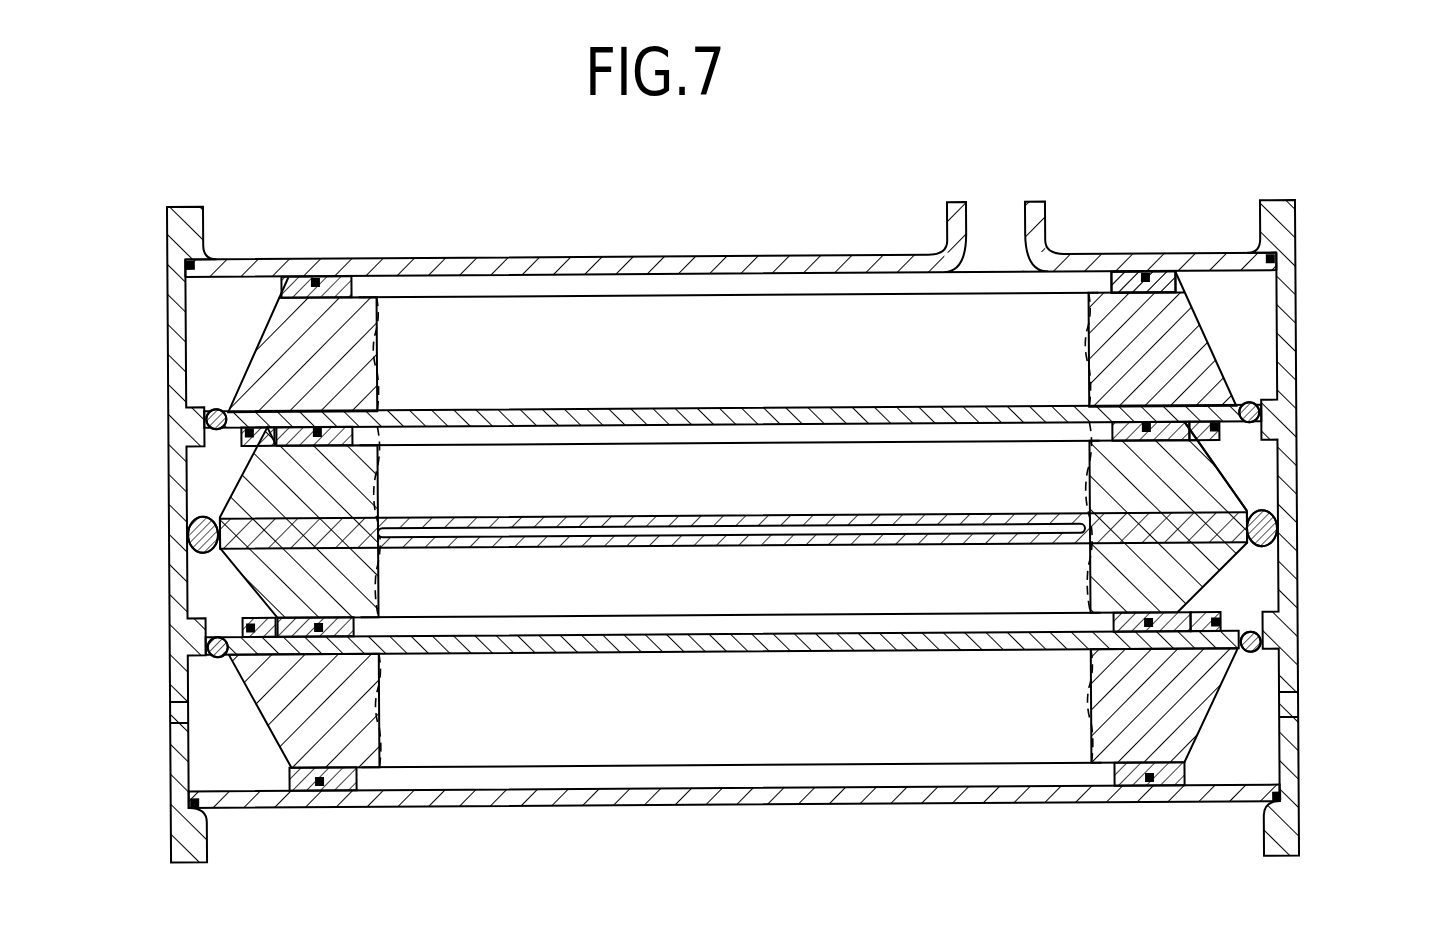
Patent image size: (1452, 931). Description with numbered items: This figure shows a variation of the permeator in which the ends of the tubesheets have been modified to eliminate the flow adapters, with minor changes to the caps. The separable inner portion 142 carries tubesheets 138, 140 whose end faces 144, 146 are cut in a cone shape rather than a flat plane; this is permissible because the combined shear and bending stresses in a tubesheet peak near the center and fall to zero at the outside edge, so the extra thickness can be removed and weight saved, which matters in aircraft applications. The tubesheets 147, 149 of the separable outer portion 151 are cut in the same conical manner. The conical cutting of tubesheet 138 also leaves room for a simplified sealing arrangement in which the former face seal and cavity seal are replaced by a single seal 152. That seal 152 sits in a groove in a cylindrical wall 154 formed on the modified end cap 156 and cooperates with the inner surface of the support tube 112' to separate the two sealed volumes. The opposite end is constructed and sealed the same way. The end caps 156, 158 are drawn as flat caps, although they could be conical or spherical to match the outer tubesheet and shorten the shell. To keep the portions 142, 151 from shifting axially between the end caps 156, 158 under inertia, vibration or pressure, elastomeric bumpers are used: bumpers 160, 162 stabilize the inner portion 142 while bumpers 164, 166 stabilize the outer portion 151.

The separable outer portion 151 is at (475, 322).
The support tube 112' is at (732, 306).
The separable inner portion 142 is at (613, 457).
The tubesheet 149 is at (285, 342).
The tubesheet 147 is at (1180, 350).
The elastomeric bumper 166 is at (217, 403).
The elastomeric bumper 164 is at (1250, 398).
The tubesheet 140 is at (270, 500).
The tubesheet 138 is at (1200, 492).
The end face 144 is at (1245, 503).
The end face 146 is at (223, 513).
The elastomeric bumper 162 is at (255, 590).
The elastomeric bumper 160 is at (1260, 553).
The seal 152 is at (1217, 452).
The cylindrical wall 154 is at (1247, 617).
The end cap 158 is at (170, 728).
The modified end cap 156 is at (1300, 722).